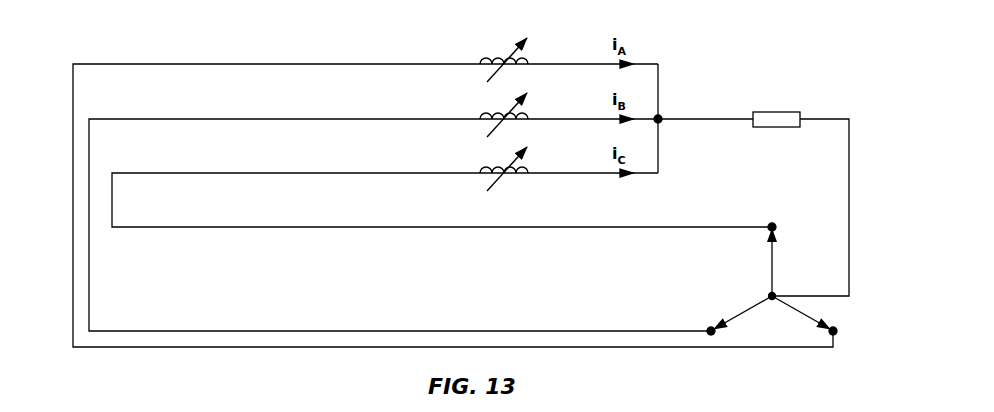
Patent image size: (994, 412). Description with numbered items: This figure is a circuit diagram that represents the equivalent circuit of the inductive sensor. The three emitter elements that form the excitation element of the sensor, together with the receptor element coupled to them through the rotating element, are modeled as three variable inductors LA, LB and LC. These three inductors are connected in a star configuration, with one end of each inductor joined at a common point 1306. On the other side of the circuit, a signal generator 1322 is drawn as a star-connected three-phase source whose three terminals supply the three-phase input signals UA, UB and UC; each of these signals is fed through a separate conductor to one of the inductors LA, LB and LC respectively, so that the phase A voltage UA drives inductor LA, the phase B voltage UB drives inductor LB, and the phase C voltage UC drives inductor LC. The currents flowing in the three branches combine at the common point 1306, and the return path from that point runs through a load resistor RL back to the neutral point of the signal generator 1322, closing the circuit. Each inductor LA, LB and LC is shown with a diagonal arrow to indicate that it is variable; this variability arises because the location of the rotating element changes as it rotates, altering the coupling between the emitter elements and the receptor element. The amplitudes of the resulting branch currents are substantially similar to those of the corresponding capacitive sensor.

The common point 1306 is at (700, 94).
The signal generator 1322 is at (771, 283).
The variable inductor LA is at (504, 58).
The variable inductor LB is at (504, 113).
The variable inductor LC is at (504, 167).
The load resistor RL is at (776, 108).
The three-phase input signal UA is at (846, 337).
The three-phase input signal UB is at (700, 320).
The three-phase input signal UC is at (785, 228).